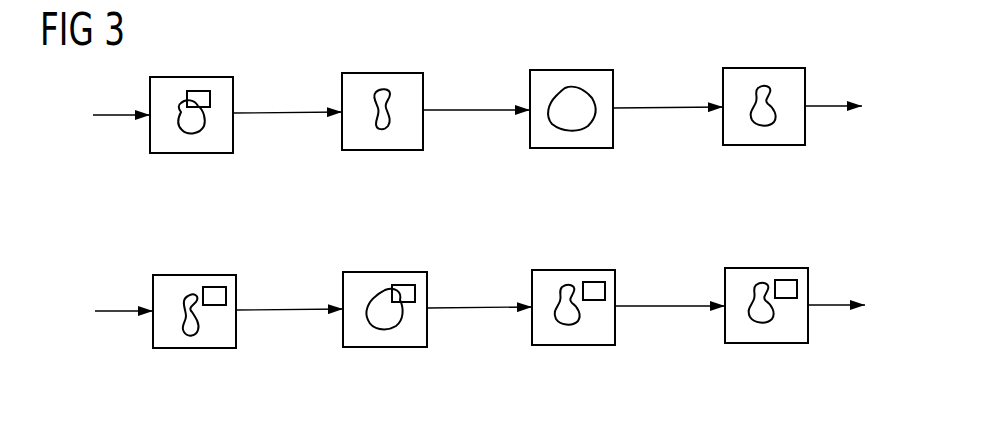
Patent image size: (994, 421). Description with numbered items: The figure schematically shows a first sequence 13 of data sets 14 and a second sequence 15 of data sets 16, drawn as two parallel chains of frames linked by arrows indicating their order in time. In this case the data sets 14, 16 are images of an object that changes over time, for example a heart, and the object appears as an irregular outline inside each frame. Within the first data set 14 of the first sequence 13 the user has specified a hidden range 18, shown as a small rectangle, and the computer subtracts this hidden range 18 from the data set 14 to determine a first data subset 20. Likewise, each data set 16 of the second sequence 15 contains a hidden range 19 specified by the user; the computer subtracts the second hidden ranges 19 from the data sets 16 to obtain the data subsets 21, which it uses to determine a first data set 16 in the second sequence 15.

The first sequence 13 is at (852, 80).
The data set 14 is at (193, 77).
The second sequence 15 is at (852, 243).
The data set 16 is at (196, 275).
The hidden range 18 is at (210, 99).
The hidden range 19 is at (226, 298).
The first data subset 20 is at (213, 145).
The data subset 21 is at (216, 342).